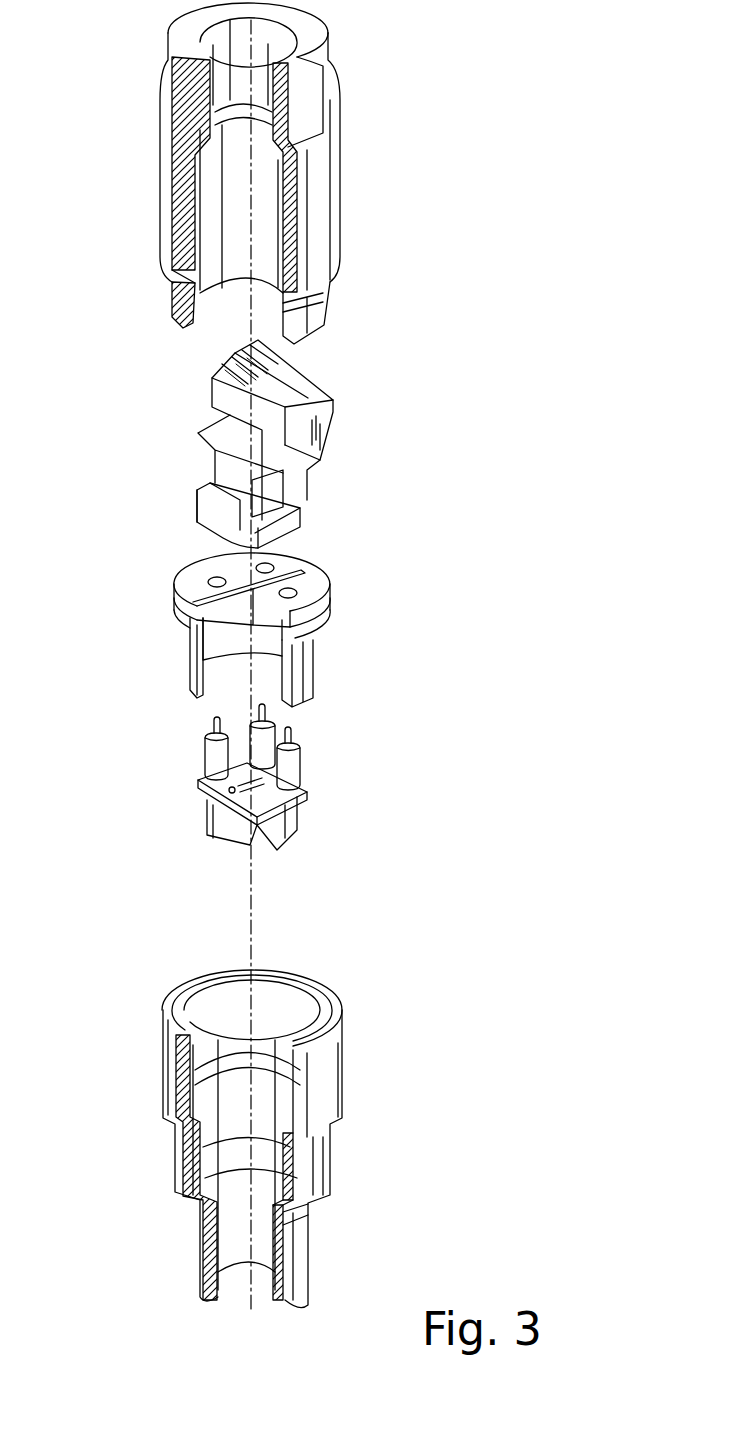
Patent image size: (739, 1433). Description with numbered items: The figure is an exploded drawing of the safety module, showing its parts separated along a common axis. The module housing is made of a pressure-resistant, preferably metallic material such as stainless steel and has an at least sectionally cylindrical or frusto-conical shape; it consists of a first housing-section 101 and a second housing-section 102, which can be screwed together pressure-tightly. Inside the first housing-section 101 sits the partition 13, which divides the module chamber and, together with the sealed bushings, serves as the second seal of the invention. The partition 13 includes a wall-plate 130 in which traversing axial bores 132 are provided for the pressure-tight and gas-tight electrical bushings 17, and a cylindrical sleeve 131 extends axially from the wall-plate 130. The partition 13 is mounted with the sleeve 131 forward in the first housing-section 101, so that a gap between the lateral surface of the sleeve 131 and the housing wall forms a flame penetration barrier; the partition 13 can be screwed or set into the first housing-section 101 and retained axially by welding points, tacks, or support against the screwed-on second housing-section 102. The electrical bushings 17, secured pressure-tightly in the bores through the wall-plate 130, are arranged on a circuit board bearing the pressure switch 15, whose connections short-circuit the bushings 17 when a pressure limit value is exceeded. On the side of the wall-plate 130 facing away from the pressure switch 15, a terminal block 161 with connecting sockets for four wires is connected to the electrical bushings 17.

The first housing-section 101 is at (322, 1083).
The second housing-section 102 is at (320, 210).
The partition 13 is at (243, 627).
The wall-plate 130 is at (185, 583).
The cylindrical sleeve 131 is at (190, 668).
The axial bores 132 is at (325, 586).
The pressure switch 15 is at (253, 801).
The terminal block 161 is at (320, 428).
The electrical bushings 17 is at (213, 725).